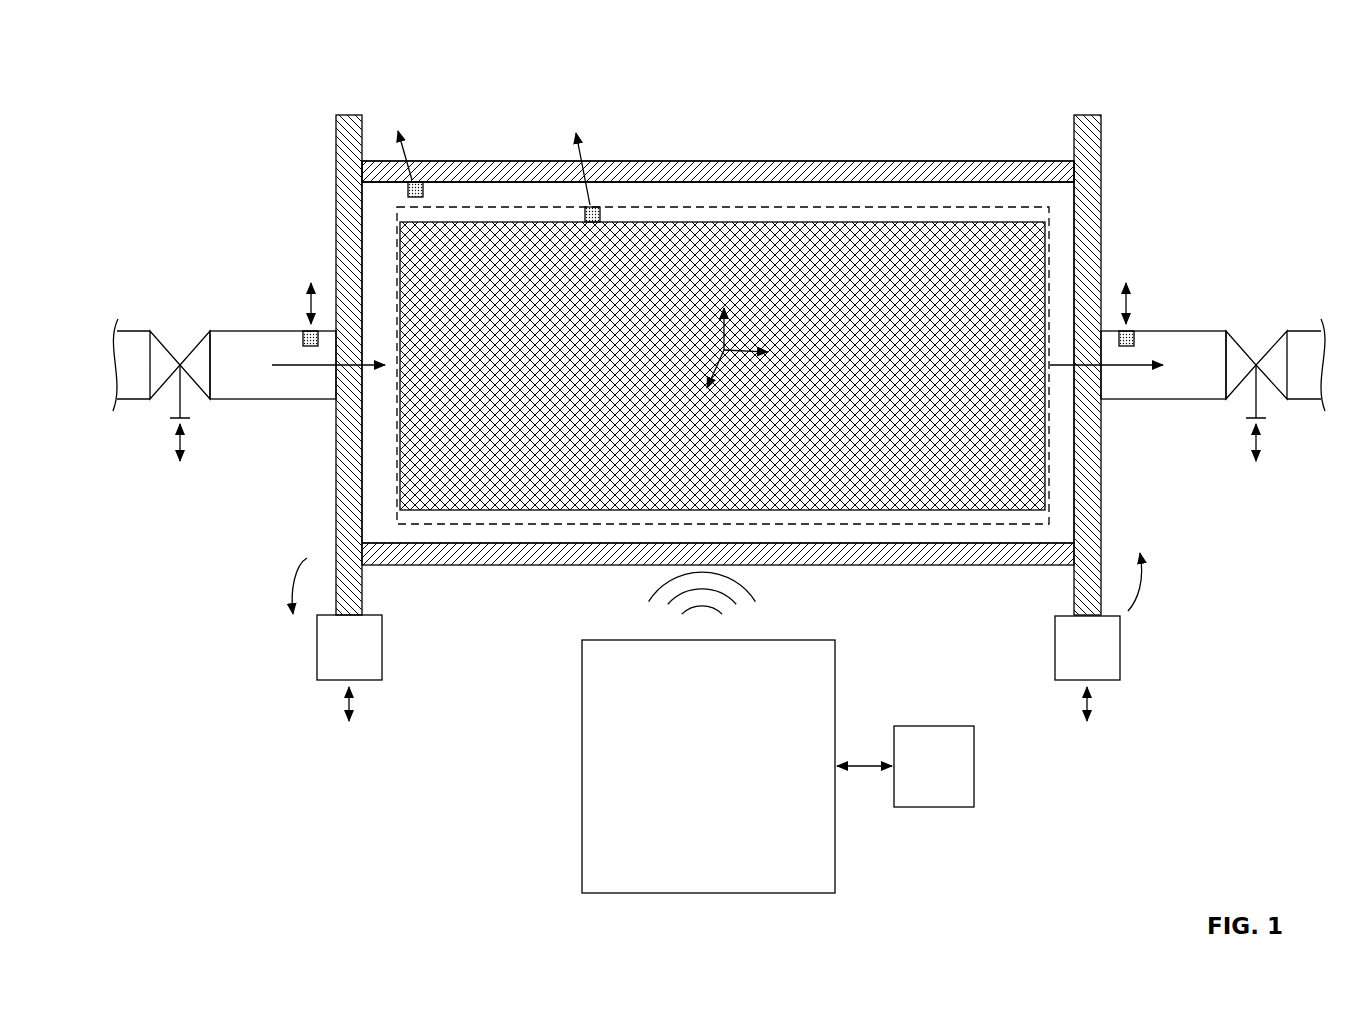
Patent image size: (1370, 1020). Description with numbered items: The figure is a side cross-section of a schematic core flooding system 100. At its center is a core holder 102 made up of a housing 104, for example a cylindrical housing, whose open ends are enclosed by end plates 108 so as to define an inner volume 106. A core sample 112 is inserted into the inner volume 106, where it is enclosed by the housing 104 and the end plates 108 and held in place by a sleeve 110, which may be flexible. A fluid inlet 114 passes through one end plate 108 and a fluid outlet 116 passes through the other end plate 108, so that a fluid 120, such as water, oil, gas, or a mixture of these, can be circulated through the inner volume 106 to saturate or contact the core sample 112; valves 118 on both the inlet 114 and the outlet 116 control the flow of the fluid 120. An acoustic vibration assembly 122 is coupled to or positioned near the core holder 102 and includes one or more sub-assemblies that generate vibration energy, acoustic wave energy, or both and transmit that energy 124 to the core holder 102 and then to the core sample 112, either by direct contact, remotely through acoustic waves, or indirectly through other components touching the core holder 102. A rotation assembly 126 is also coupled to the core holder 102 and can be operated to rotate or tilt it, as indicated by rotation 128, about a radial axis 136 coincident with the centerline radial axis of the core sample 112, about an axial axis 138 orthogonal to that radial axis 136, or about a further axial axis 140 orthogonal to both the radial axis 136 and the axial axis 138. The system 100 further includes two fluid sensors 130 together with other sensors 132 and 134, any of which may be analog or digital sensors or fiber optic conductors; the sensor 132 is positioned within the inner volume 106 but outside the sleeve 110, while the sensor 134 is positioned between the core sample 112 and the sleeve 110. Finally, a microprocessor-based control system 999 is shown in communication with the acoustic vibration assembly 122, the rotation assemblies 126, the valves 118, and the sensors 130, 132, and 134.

The core flooding system 100 is at (1200, 50).
The core holder 102 is at (922, 157).
The housing 104 is at (687, 160).
The inner volume 106 is at (778, 192).
The end plate 108 is at (336, 163).
The sleeve 110 is at (478, 206).
The core sample 112 is at (522, 465).
The fluid inlet 114 is at (238, 330).
The fluid outlet 116 is at (1198, 330).
The valve 118 is at (196, 350).
The fluid 120 is at (322, 368).
The acoustic vibration assembly 122 is at (687, 779).
The vibrational energy 124 is at (748, 612).
The rotation assembly 126 is at (328, 659).
The rotation 128 is at (293, 580).
The fluid sensor 130 is at (300, 340).
The sensor 132 is at (425, 161).
The sensor 134 is at (598, 206).
The radial axis 136 is at (747, 351).
The axial axis 138 is at (722, 332).
The axial axis 140 is at (717, 367).
The control system 999 is at (913, 779).